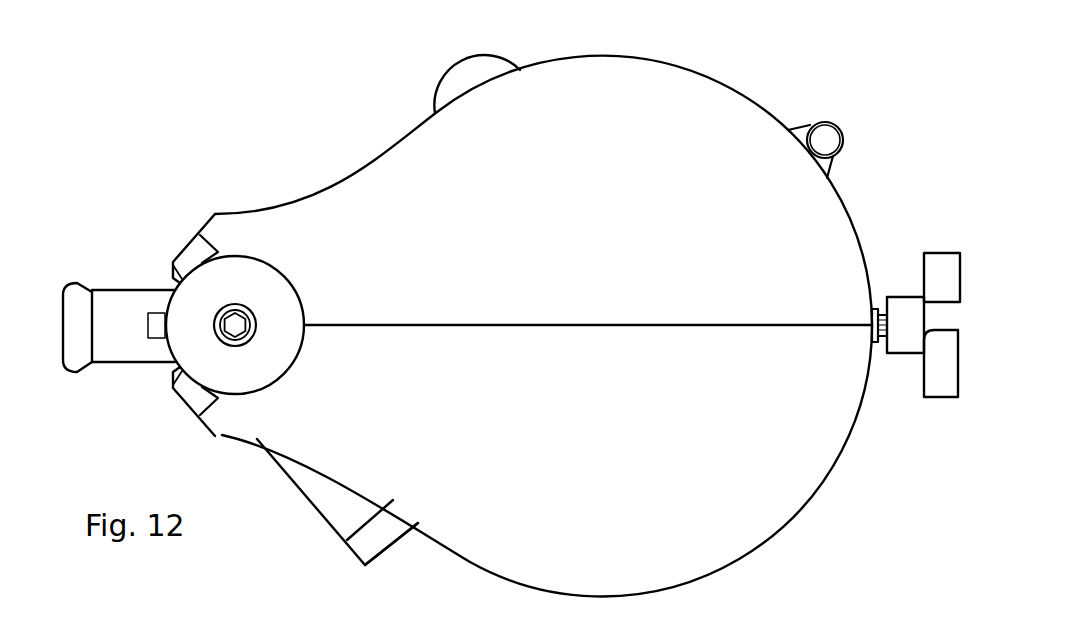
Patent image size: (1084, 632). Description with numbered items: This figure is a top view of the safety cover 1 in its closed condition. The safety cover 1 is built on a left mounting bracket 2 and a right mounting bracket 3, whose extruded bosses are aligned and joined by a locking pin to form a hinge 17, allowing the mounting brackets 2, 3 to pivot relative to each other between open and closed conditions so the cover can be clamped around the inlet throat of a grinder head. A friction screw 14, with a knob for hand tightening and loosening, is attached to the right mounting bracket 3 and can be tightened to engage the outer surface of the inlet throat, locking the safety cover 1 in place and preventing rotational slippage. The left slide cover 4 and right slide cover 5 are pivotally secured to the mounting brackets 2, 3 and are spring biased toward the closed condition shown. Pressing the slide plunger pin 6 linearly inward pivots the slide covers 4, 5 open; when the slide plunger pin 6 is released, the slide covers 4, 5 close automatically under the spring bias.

The safety cover 1 is at (252, 125).
The left mounting bracket 2 is at (333, 487).
The right mounting bracket 3 is at (382, 537).
The left slide cover 4 is at (658, 110).
The right slide cover 5 is at (637, 533).
The slide plunger pin 6 is at (115, 307).
The friction screw 14 is at (941, 373).
The hinge 17 is at (823, 137).